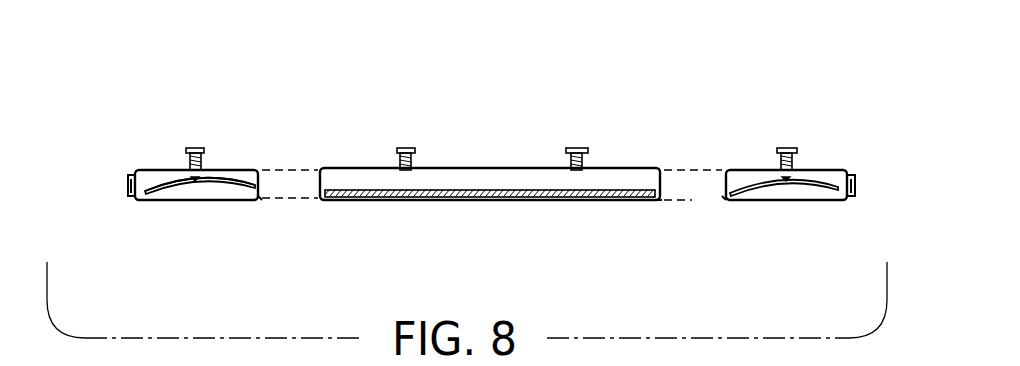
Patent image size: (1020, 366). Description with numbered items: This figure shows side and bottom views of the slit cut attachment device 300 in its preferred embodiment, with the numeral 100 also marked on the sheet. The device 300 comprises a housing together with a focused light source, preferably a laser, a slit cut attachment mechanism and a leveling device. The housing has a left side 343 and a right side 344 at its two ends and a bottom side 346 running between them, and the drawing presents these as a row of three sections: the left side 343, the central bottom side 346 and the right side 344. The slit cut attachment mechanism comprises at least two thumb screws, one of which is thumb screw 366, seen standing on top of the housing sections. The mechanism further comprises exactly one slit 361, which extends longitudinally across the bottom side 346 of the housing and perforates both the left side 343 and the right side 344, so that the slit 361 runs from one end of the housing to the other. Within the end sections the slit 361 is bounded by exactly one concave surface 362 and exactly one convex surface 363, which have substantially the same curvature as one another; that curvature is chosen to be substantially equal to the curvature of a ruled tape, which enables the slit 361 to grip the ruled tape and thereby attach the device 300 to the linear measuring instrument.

The air freshener device 100 is at (240, 76).
The slit cut attachment device 300 is at (133, 98).
The left side 343 is at (150, 180).
The right side 344 is at (790, 202).
The bottom side 346 is at (487, 183).
The slit 361 is at (265, 197).
The concave surface 362 is at (218, 172).
The convex surface 363 is at (215, 189).
The thumb screw 366 is at (567, 150).